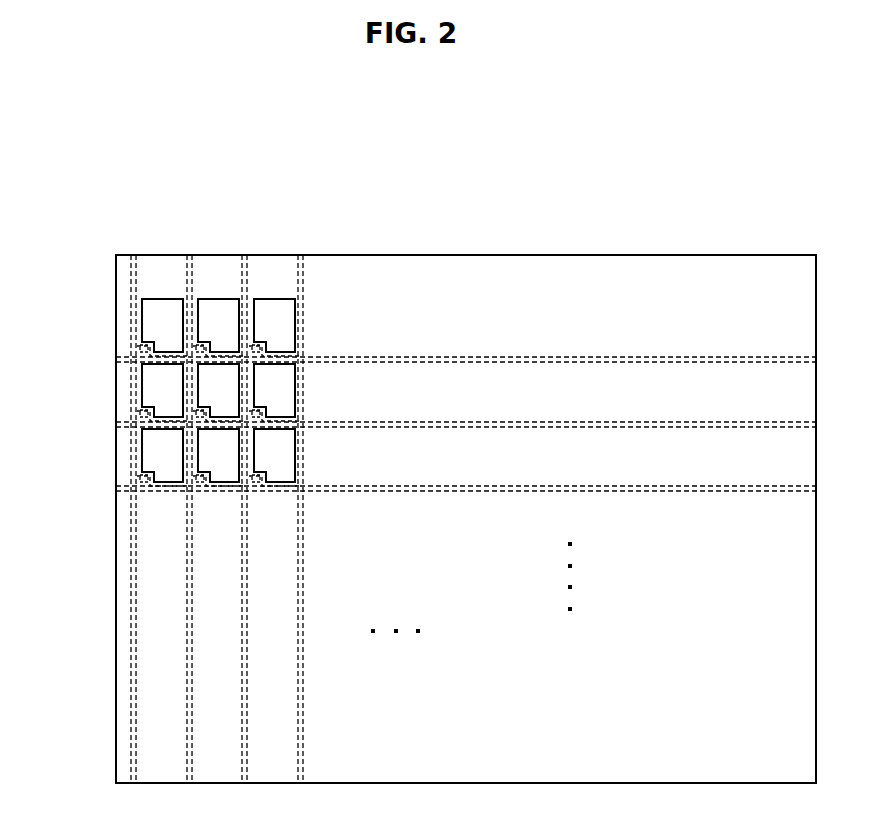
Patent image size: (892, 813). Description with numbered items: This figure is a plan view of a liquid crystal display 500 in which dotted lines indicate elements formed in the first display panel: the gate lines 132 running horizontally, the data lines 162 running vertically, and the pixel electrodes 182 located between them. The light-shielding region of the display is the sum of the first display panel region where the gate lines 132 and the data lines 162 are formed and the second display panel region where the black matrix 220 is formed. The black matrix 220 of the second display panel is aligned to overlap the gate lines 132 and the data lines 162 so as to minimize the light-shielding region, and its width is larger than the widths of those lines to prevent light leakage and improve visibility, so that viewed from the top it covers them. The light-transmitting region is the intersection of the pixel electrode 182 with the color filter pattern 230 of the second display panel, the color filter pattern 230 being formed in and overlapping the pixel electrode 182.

The liquid crystal display 500 is at (648, 213).
The data lines 162 is at (132, 272).
The gate lines 132 is at (132, 355).
The pixel electrode 182 is at (150, 297).
The color filter pattern 230 is at (168, 312).
The black matrix 220 is at (145, 423).